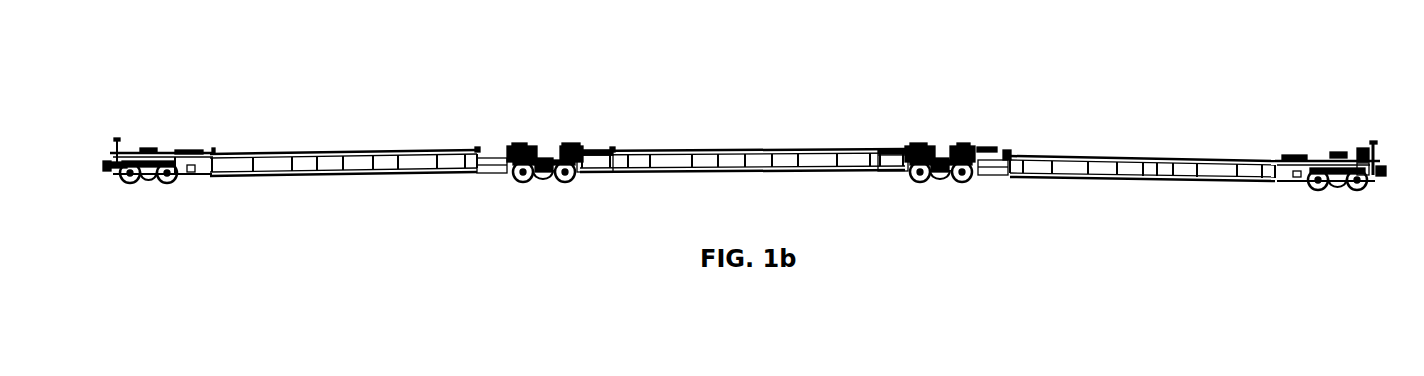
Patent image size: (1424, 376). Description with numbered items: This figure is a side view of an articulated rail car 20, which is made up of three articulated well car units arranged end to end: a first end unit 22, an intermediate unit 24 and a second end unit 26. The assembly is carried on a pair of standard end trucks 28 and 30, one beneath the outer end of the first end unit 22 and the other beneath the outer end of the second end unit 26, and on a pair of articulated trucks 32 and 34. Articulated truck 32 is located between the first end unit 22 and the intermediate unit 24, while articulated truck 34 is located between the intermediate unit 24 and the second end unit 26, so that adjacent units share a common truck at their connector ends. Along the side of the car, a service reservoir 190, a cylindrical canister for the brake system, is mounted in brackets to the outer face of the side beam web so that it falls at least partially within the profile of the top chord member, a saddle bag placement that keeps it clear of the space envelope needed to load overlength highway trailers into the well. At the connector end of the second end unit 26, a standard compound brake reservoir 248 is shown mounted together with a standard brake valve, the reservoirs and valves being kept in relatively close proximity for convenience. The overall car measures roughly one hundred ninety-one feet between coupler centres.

The articulated rail car 20 is at (221, 84).
The first end unit 22 is at (272, 179).
The intermediate unit 24 is at (614, 176).
The second end unit 26 is at (1084, 181).
The end truck 28 is at (150, 184).
The end truck 30 is at (1339, 191).
The articulated truck 32 is at (546, 176).
The articulated truck 34 is at (941, 182).
The service reservoir 190 is at (500, 152).
The compound brake reservoir 248 is at (1362, 148).